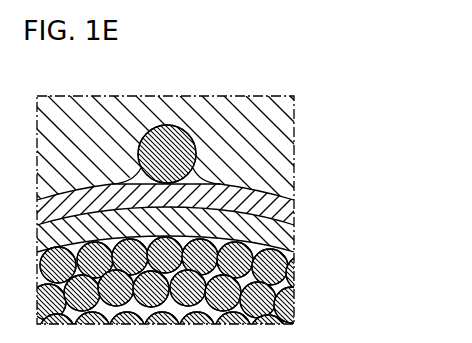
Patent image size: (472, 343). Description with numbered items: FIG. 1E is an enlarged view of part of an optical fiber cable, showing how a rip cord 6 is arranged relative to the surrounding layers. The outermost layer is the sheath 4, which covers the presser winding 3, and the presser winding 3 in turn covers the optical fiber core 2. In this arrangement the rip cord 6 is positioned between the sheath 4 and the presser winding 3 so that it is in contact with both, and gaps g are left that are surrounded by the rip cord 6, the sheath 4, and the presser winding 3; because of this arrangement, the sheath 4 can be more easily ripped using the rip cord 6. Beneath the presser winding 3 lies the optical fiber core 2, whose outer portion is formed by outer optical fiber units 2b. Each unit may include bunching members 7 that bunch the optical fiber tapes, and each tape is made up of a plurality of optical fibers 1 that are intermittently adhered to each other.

The optical fibers 1 is at (336, 228).
The optical fiber core 2 is at (190, 285).
The optical fiber units (outer units) 2b is at (190, 285).
The presser winding 3 is at (280, 210).
The sheath 4 is at (217, 124).
The rip cord 6 is at (163, 138).
The bunching members 7 is at (286, 237).
The gaps g is at (136, 178).